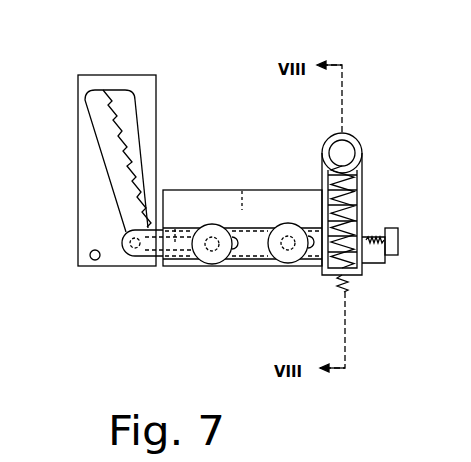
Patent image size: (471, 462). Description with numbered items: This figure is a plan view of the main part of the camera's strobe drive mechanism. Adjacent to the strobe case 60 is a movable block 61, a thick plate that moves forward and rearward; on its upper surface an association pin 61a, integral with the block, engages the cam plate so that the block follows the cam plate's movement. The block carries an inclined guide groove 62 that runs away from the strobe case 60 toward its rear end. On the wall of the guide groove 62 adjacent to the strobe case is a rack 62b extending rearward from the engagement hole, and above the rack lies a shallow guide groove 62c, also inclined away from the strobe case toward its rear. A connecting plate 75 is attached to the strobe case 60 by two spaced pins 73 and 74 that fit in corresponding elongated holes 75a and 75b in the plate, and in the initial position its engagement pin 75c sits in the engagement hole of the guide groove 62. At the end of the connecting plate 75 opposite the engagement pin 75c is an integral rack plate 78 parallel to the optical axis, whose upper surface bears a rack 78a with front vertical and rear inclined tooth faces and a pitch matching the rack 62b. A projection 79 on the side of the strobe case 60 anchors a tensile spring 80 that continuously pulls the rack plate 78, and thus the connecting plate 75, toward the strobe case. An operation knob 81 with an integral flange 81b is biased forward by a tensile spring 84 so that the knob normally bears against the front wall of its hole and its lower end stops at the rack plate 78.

The strobe case 60 is at (248, 267).
The movable block 61 is at (110, 258).
The association pin 61a is at (90, 258).
The inclined guide groove 62 is at (93, 122).
The rack 62b is at (118, 152).
The shallow guide groove 62c is at (125, 177).
The pin 73 is at (210, 262).
The pin 74 is at (290, 262).
The connecting plate 75 is at (172, 250).
The elongated hole 75a is at (232, 232).
The elongated hole 75b is at (312, 232).
The engagement pin 75c is at (142, 256).
The rack plate 78 is at (362, 175).
The rack 78a is at (352, 212).
The projection 79 is at (398, 237).
The tensile spring 80 is at (378, 244).
The operation knob 81 is at (350, 153).
The flange 81b is at (351, 139).
The tensile spring 84 is at (350, 245).